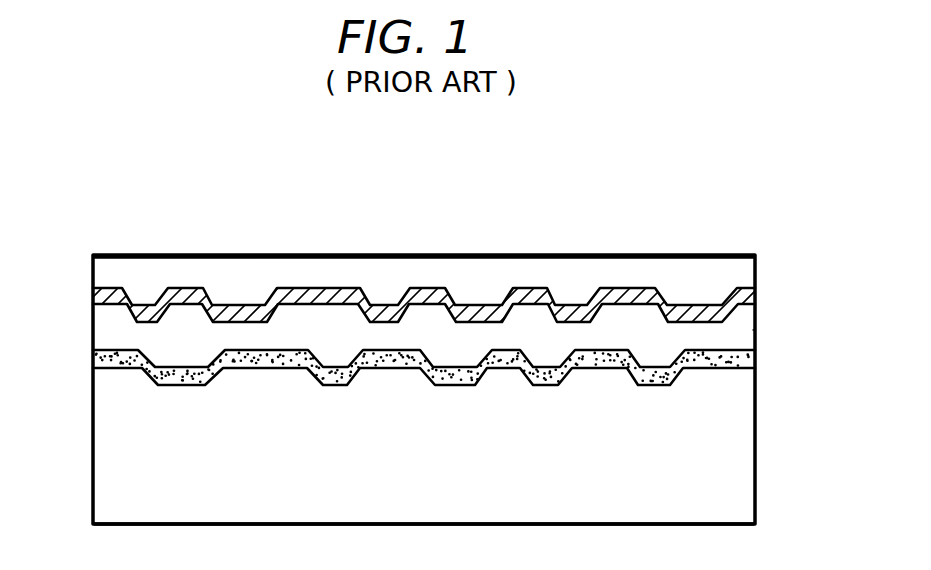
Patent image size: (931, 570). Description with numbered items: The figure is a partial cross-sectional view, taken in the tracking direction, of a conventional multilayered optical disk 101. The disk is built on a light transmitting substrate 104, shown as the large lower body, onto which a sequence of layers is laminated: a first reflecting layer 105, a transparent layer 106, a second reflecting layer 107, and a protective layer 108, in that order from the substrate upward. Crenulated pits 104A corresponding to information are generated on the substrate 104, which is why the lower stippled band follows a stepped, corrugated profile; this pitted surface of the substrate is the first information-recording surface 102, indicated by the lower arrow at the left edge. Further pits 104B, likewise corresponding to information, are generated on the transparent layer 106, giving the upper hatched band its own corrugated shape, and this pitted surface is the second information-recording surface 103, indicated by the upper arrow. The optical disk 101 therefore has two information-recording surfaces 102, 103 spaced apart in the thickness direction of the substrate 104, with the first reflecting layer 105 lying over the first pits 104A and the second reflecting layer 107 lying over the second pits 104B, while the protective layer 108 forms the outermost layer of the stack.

The multilayered optical disk 101 is at (183, 182).
The first information-recording surface 102 is at (90, 362).
The second information-recording surface 103 is at (90, 296).
The light transmitting substrate 104 is at (742, 477).
The crenulated pits 104A is at (538, 384).
The pits 104B is at (393, 300).
The first reflecting layer 105 is at (753, 360).
The transparent layer 106 is at (742, 330).
The second reflecting layer 107 is at (745, 298).
The protective layer 108 is at (738, 270).